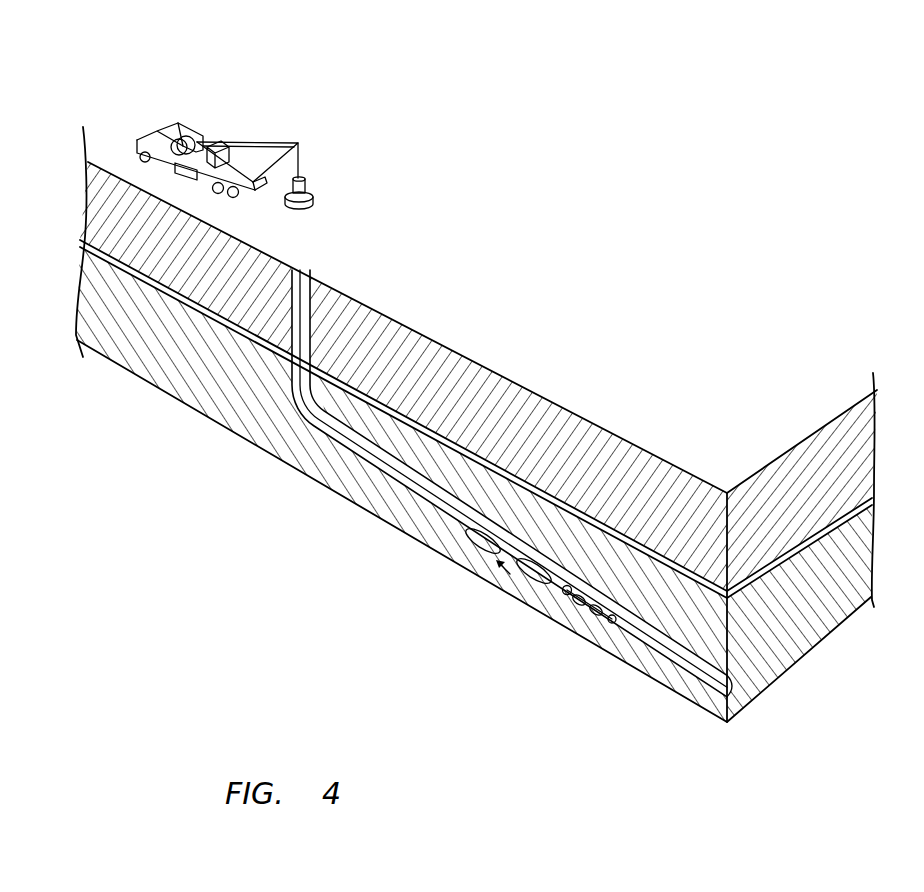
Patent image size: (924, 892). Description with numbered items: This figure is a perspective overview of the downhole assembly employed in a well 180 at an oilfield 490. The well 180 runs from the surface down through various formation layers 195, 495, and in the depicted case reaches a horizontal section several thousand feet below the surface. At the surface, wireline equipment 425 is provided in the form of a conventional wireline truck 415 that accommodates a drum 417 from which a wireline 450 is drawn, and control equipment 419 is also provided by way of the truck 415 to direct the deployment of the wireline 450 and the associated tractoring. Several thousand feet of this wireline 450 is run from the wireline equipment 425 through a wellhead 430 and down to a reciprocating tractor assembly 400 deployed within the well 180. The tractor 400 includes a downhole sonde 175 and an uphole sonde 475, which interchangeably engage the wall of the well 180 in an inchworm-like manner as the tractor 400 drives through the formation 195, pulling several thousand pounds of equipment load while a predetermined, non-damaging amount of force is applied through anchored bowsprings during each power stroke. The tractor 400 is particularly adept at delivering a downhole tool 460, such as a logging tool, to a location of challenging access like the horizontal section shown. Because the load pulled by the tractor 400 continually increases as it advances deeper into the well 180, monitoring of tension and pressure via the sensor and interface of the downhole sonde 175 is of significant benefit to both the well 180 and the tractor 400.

The wireline equipment 425 is at (237, 122).
The wireline truck 415 is at (142, 134).
The drum 417 is at (205, 138).
The control equipment 419 is at (233, 147).
The wireline 450 is at (268, 140).
The wellhead 430 is at (305, 183).
The oilfield 490 is at (476, 425).
The formation layer 495 is at (582, 469).
The formation 195 is at (797, 624).
The well 180 is at (663, 648).
The uphole sonde 475 is at (480, 541).
The downhole sonde 175 is at (527, 568).
The reciprocating tractor assembly 400 is at (498, 567).
The downhole tool 460 is at (603, 618).